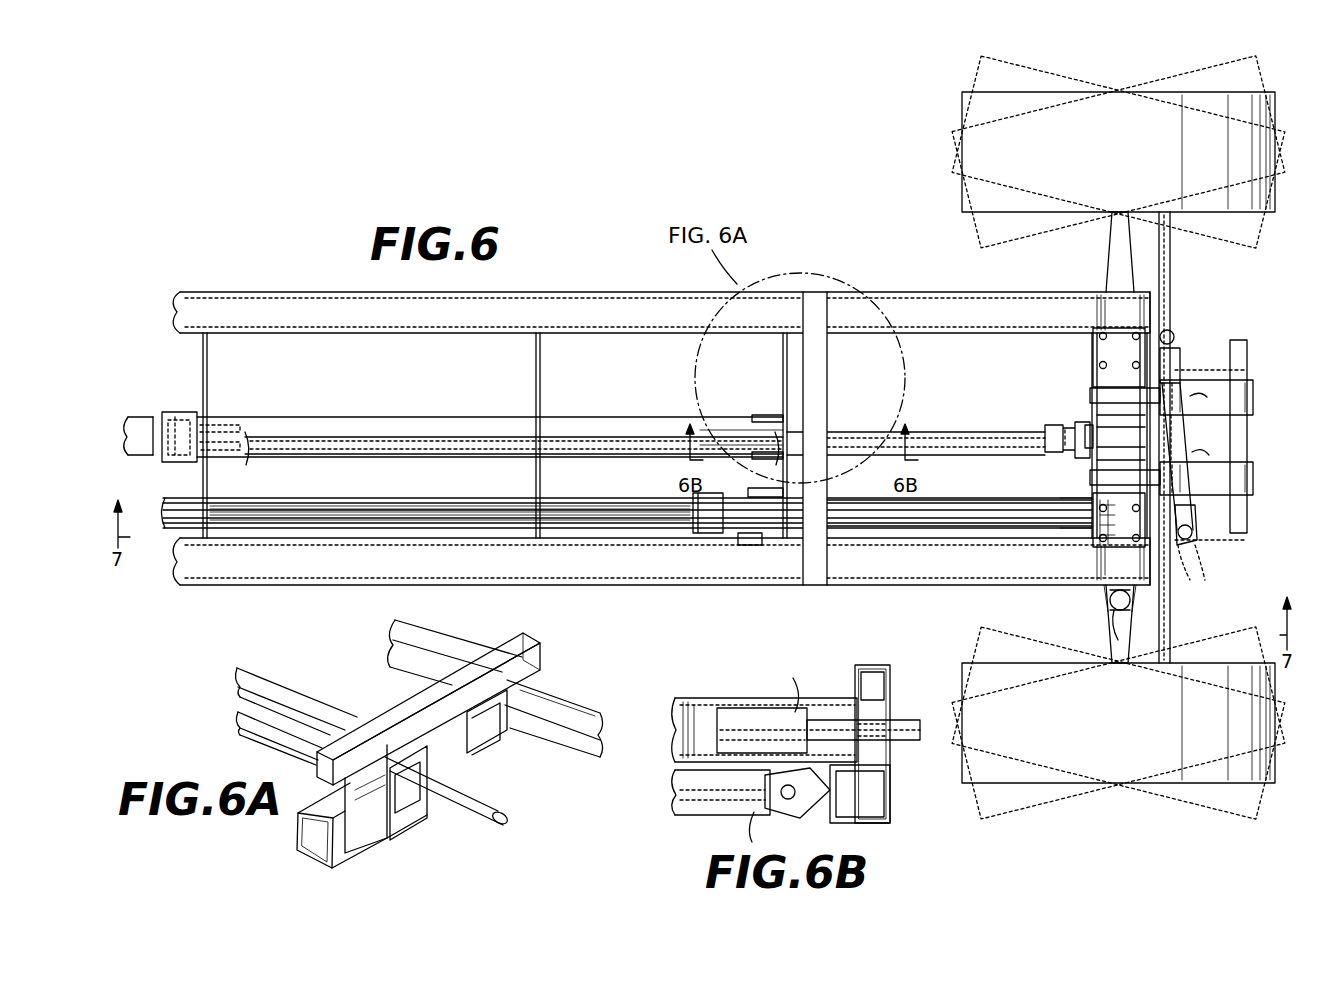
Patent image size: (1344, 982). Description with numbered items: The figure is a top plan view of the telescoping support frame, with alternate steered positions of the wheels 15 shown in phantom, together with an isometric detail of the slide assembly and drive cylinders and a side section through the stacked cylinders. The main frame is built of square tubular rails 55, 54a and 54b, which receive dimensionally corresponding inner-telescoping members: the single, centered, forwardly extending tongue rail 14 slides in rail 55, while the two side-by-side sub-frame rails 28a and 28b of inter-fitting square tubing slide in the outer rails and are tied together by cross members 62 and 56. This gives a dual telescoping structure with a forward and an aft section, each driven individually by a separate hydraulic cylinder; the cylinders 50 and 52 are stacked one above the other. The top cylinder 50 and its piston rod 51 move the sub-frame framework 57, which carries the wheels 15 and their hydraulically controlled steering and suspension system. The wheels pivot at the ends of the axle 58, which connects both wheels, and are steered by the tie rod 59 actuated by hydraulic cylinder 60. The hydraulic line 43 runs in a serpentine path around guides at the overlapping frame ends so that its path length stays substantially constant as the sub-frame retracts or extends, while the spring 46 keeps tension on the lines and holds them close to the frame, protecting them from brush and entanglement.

In FIG. 6, the tongue rail 14 is at (135, 425).
In FIG. 6, the wheels 15 is at (1110, 162).
In FIG. 6, the sub-frame rail 28a is at (940, 298).
In FIG. 6A, the sub-frame rail 28a is at (565, 702).
In FIG. 6, the sub-frame rail 28b is at (950, 570).
In FIG. 6, the hydraulic line 43 is at (985, 498).
In FIG. 6, the spring 46 is at (605, 506).
In FIG. 6, the hydraulic cylinder 50 is at (603, 420).
In FIG. 6A, the hydraulic cylinder 50 is at (266, 672).
In FIG. 6B, the hydraulic cylinder 50 is at (748, 722).
In FIG. 6, the piston rod 51 is at (980, 430).
In FIG. 6A, the piston rod 51 is at (500, 800).
In FIG. 6B, the piston rod 51 is at (828, 725).
In FIG. 6A, the hydraulic cylinder 52 is at (245, 724).
In FIG. 6B, the hydraulic cylinder 52 is at (706, 778).
In FIG. 6, the main frame rail 54a is at (560, 312).
In FIG. 6A, the main frame rail 54a is at (408, 656).
In FIG. 6, the main frame rail 54b is at (675, 566).
In FIG. 6, the main frame rail 55 is at (392, 430).
In FIG. 6, the cross member 56 is at (815, 362).
In FIG. 6A, the cross member 56 is at (370, 840).
In FIG. 6B, the cross member 56 is at (890, 810).
In FIG. 6, the sub-frame framework 57 is at (1090, 341).
In FIG. 6, the axle 58 is at (1118, 268).
In FIG. 6, the tie rod 59 is at (1173, 288).
In FIG. 6, the hydraulic cylinder 60 is at (1240, 437).
In FIG. 6, the cross member 62 is at (210, 357).